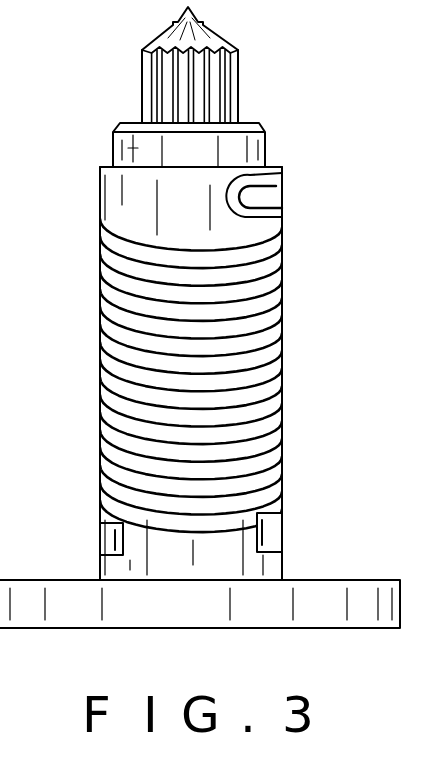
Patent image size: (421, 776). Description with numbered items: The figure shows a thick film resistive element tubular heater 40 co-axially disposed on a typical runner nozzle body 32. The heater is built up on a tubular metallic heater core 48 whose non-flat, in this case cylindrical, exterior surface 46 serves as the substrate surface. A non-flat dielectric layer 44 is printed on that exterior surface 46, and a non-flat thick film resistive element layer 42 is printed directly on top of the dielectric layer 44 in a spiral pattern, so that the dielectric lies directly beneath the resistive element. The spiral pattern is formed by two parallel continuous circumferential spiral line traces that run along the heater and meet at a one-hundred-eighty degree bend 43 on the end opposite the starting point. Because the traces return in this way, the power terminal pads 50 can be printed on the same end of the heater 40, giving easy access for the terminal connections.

The runner nozzle body 32 is at (145, 148).
The thick film resistive element tubular heater 40 is at (100, 388).
The resistive element layer 42 is at (187, 273).
The 180 degree bend 43 is at (283, 175).
The dielectric layer 44 is at (200, 248).
The exterior surface 46 is at (157, 200).
The tubular metallic heater core 48 is at (250, 65).
The power terminal pads 50 is at (105, 529).